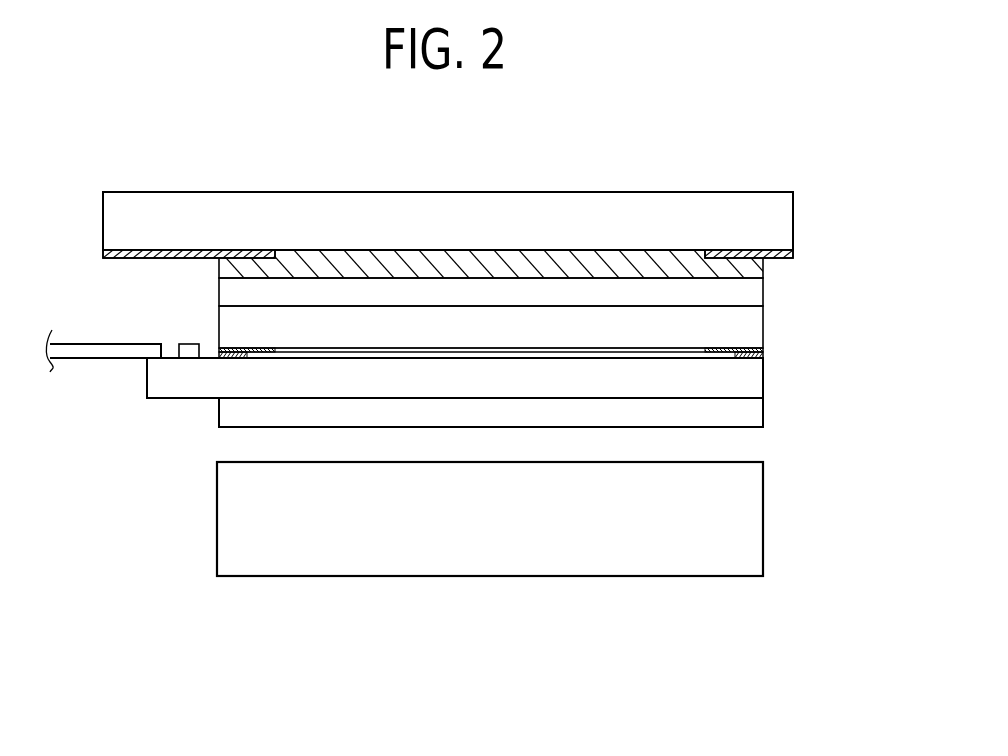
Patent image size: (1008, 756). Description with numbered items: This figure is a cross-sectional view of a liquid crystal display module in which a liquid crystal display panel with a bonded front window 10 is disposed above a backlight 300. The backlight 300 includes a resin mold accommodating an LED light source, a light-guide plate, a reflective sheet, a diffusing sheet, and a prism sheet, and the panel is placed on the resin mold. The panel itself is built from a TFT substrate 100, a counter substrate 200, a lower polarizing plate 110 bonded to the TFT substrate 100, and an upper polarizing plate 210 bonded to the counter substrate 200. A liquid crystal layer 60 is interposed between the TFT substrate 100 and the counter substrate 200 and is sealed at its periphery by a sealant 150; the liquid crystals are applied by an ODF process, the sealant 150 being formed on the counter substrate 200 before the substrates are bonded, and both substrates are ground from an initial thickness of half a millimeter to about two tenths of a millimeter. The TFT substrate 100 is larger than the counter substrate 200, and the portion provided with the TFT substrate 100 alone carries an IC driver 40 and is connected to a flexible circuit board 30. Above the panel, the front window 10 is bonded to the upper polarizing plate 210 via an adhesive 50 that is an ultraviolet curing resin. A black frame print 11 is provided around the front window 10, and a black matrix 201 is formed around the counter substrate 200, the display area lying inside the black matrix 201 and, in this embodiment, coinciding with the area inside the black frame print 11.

The front window 10 is at (583, 200).
The black frame print 11 is at (133, 252).
The adhesive 50 is at (448, 265).
The upper polarizing plate 210 is at (753, 293).
The counter substrate 200 is at (753, 321).
The black matrix 201 is at (725, 347).
The sealant 150 is at (745, 358).
The TFT substrate 100 is at (753, 388).
The lower polarizing plate 110 is at (753, 415).
The flexible circuit board 30 is at (91, 350).
The IC driver 40 is at (190, 350).
The backlight 300 is at (756, 520).
The liquid crystal layer 60 is at (533, 358).